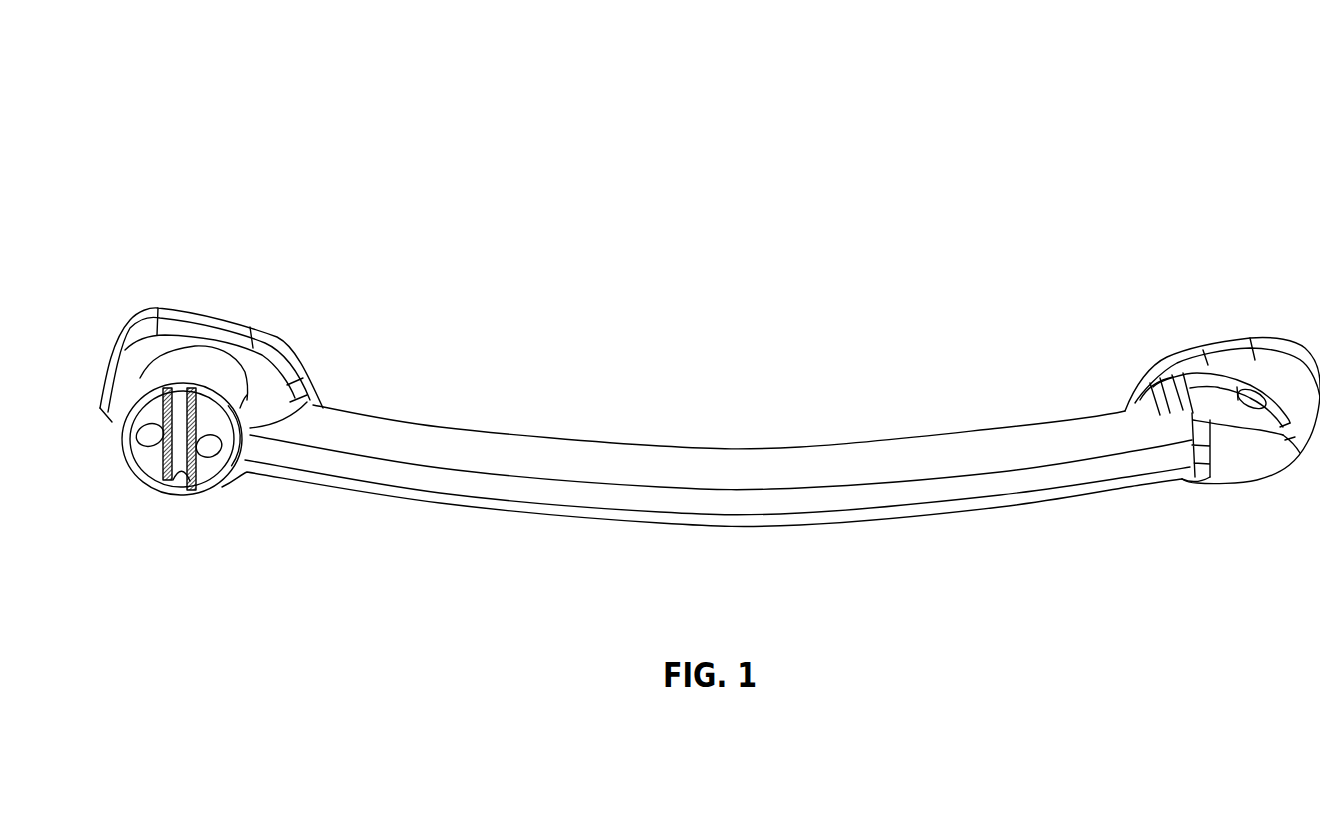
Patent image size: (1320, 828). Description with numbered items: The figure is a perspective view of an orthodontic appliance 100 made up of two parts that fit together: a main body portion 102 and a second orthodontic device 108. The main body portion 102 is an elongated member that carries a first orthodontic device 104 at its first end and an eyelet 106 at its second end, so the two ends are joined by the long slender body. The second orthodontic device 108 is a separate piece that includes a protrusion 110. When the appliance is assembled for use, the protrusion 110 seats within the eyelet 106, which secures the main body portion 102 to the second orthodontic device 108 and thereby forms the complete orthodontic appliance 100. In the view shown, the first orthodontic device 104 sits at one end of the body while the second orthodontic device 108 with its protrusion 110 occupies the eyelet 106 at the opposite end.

The orthodontic appliance 100 is at (182, 102).
The main body portion 102 is at (702, 447).
The first orthodontic device 104 is at (1273, 338).
The eyelet 106 is at (227, 357).
The second orthodontic device 108 is at (168, 306).
The protrusion 110 is at (153, 477).